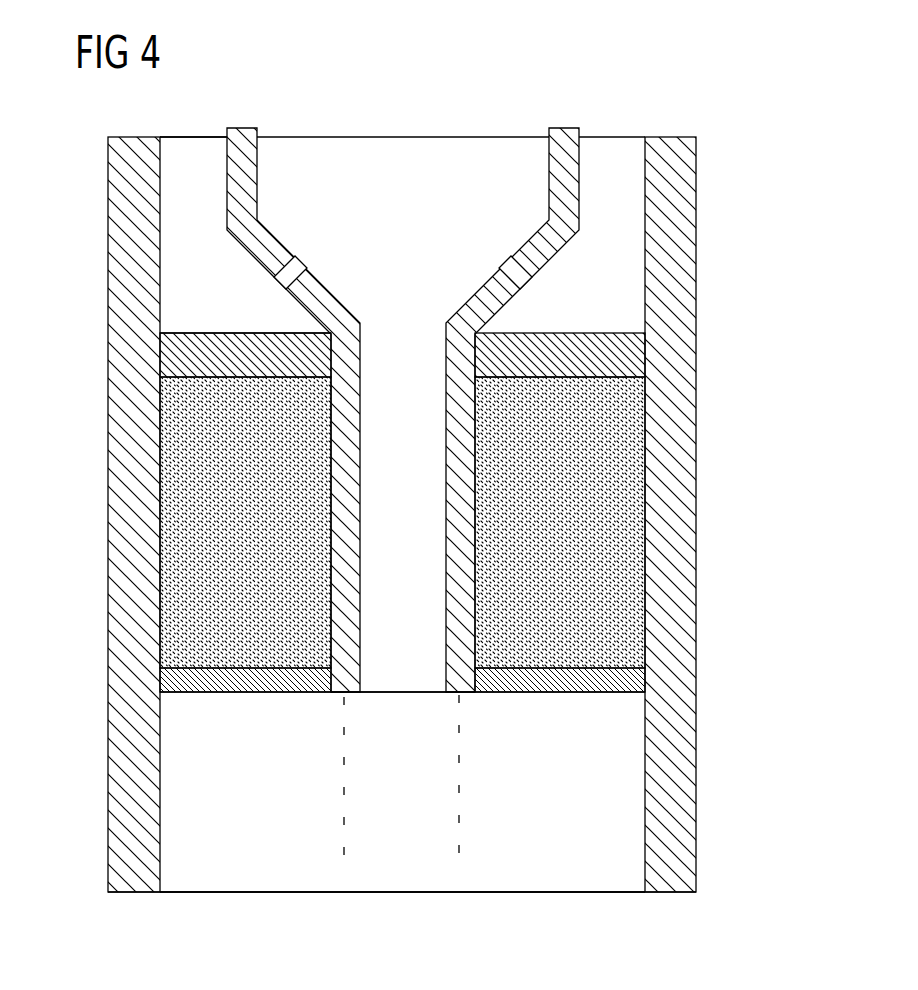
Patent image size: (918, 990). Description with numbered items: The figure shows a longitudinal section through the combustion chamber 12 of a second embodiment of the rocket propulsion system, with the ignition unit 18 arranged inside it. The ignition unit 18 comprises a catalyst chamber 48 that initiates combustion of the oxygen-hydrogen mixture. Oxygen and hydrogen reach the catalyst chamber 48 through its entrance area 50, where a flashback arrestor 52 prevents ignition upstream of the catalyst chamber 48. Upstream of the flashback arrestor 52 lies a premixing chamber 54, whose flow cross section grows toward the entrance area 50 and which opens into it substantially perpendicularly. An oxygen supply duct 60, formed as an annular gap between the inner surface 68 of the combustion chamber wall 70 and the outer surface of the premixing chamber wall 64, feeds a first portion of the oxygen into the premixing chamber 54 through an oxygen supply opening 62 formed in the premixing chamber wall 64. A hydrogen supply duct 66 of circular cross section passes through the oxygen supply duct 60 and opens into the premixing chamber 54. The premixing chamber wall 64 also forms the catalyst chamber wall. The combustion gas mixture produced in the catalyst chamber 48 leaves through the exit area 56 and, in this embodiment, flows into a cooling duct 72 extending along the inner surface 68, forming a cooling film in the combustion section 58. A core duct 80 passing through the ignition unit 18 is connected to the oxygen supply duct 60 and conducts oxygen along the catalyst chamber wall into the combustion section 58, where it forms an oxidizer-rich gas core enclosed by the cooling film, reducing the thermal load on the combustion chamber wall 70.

The combustion chamber 12 is at (707, 358).
The ignition unit 18 is at (268, 152).
The catalyst chamber 48 is at (640, 427).
The entrance area 50 is at (227, 320).
The flashback arrestor 52 is at (172, 366).
The premixing chamber 54 is at (180, 242).
The exit area 56 is at (240, 710).
The combustion section 58 is at (468, 887).
The oxygen supply duct 60 is at (406, 150).
The oxygen supply opening 62 is at (303, 258).
The premixing chamber wall 64 is at (566, 128).
The hydrogen supply duct 66 is at (615, 158).
The inner surface 68 is at (161, 178).
The combustion chamber wall 70 is at (112, 152).
The cooling duct 72 is at (280, 750).
The core duct 80 is at (402, 676).